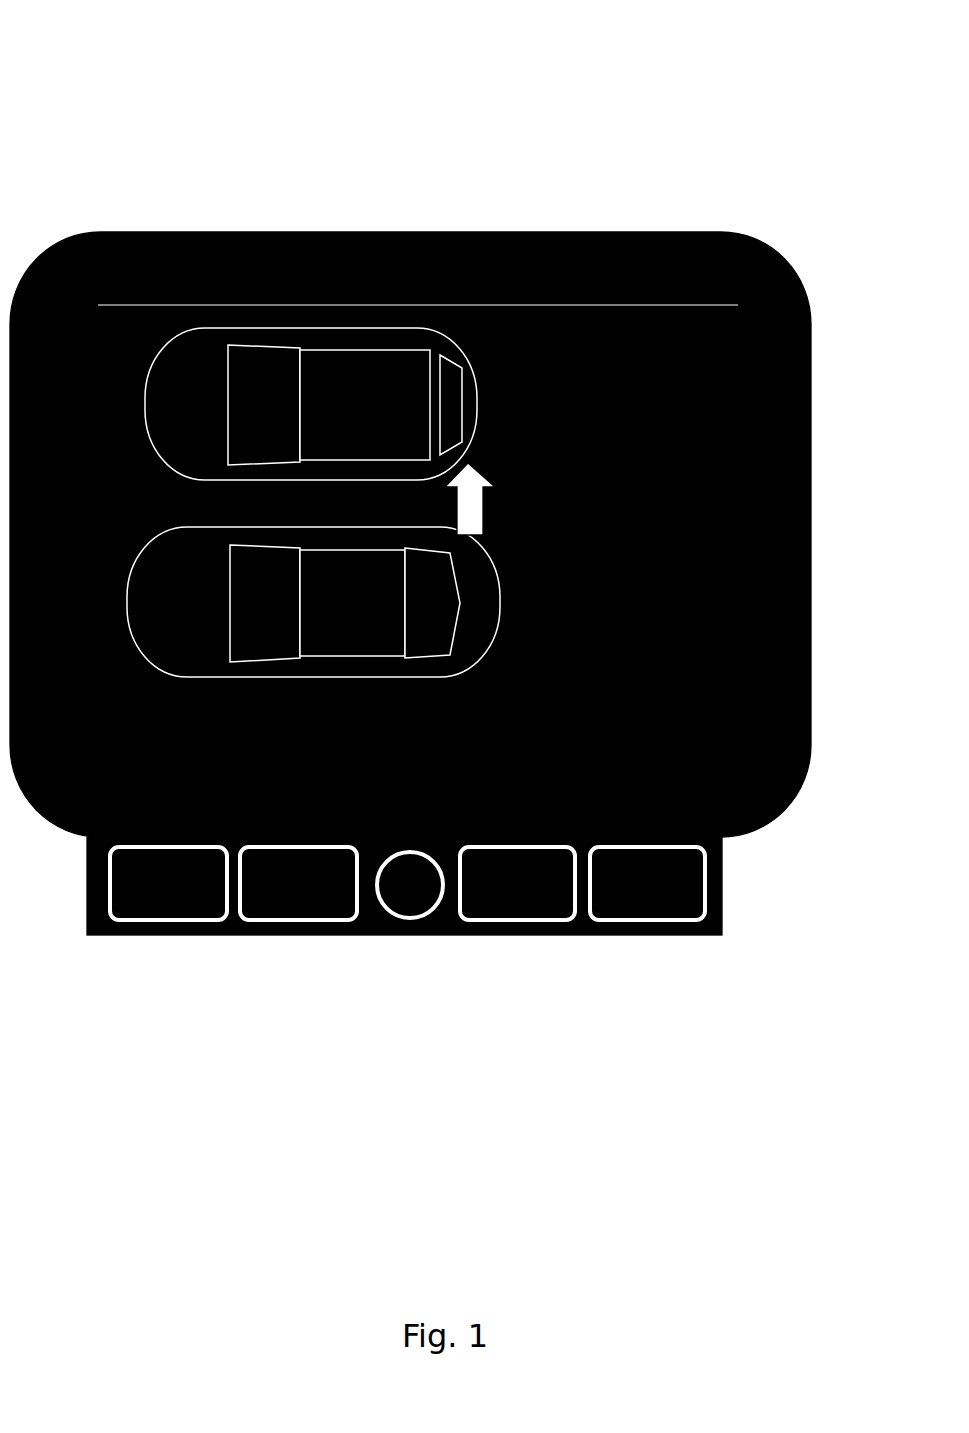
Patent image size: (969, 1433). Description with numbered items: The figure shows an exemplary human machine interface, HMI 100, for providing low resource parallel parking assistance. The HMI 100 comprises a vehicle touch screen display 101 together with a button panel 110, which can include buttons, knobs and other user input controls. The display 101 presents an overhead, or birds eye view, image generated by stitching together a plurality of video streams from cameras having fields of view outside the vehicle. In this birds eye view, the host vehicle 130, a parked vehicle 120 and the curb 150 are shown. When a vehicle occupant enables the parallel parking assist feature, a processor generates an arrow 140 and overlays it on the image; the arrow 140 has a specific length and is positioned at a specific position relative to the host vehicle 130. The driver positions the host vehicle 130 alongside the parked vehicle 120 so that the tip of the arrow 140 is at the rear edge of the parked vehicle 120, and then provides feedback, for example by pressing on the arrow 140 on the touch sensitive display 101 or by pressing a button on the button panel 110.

The human machine interface 100 is at (477, 40).
The display 101 is at (167, 228).
The button panel 110 is at (543, 941).
The parked vehicle 120 is at (381, 415).
The host vehicle 130 is at (370, 603).
The arrow 140 is at (488, 497).
The curb 150 is at (590, 316).